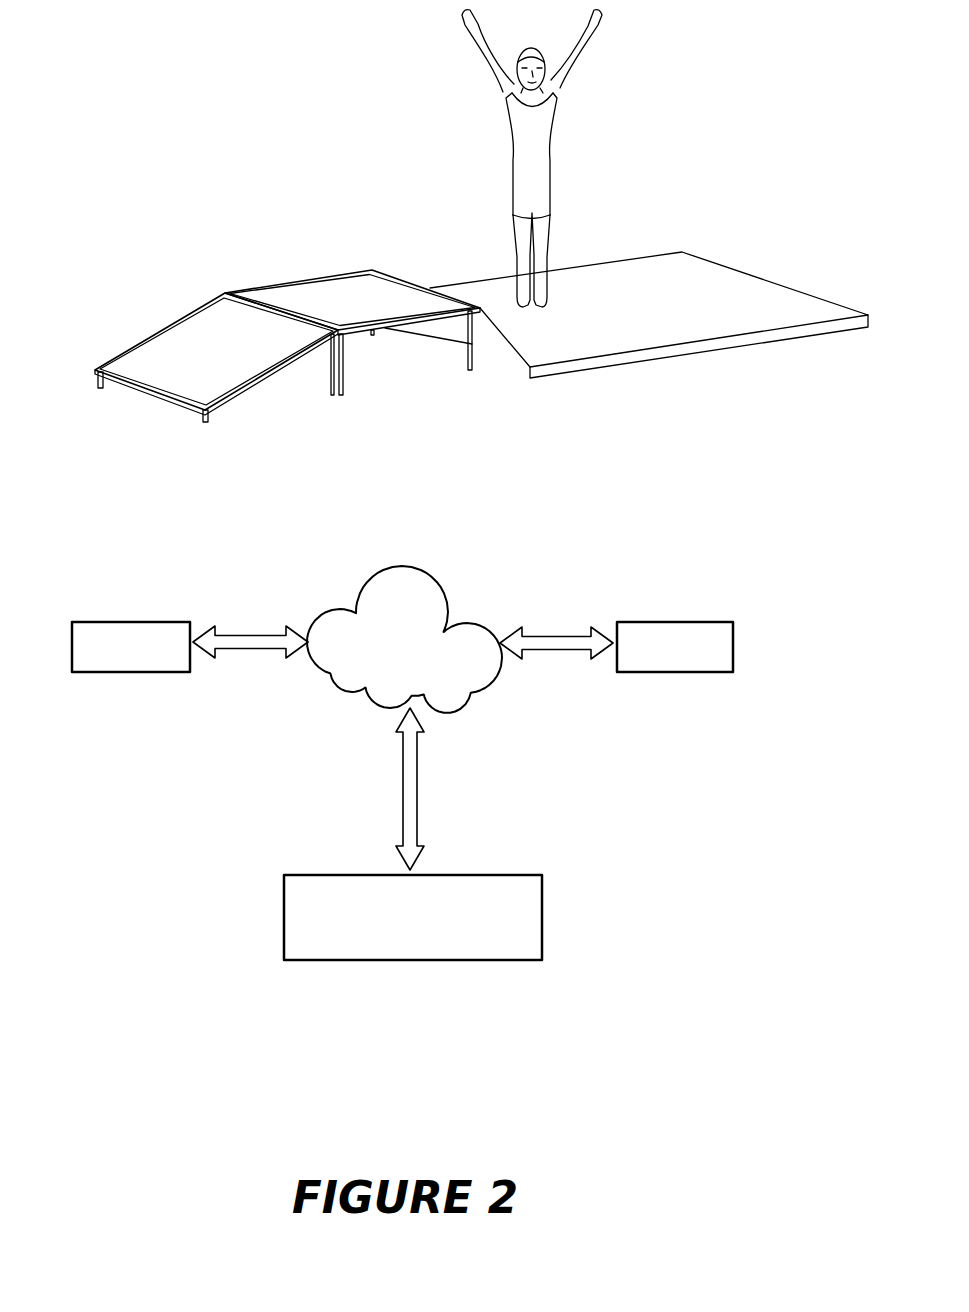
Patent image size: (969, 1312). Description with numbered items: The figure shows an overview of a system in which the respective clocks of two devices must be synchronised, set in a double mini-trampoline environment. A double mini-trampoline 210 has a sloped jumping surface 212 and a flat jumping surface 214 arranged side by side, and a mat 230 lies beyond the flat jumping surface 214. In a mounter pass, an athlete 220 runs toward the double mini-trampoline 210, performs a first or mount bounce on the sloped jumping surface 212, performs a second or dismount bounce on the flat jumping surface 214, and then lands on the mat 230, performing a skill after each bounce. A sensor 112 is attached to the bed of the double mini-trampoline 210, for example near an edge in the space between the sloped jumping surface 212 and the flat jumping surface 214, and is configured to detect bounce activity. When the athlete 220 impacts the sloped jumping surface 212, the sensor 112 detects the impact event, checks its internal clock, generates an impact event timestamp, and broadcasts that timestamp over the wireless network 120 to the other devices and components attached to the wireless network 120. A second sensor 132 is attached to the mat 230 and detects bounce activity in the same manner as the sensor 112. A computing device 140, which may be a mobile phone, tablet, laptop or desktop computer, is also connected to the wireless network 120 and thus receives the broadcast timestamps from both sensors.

The double mini-trampoline 210 is at (389, 404).
The sloped jumping surface 212 is at (193, 337).
The flat jumping surface 214 is at (325, 283).
The athlete 220 is at (505, 103).
The mat 230 is at (613, 302).
The sensor 112 is at (122, 672).
The wireless network 120 is at (480, 697).
The sensor 132 is at (673, 672).
The computing device 140 is at (542, 912).